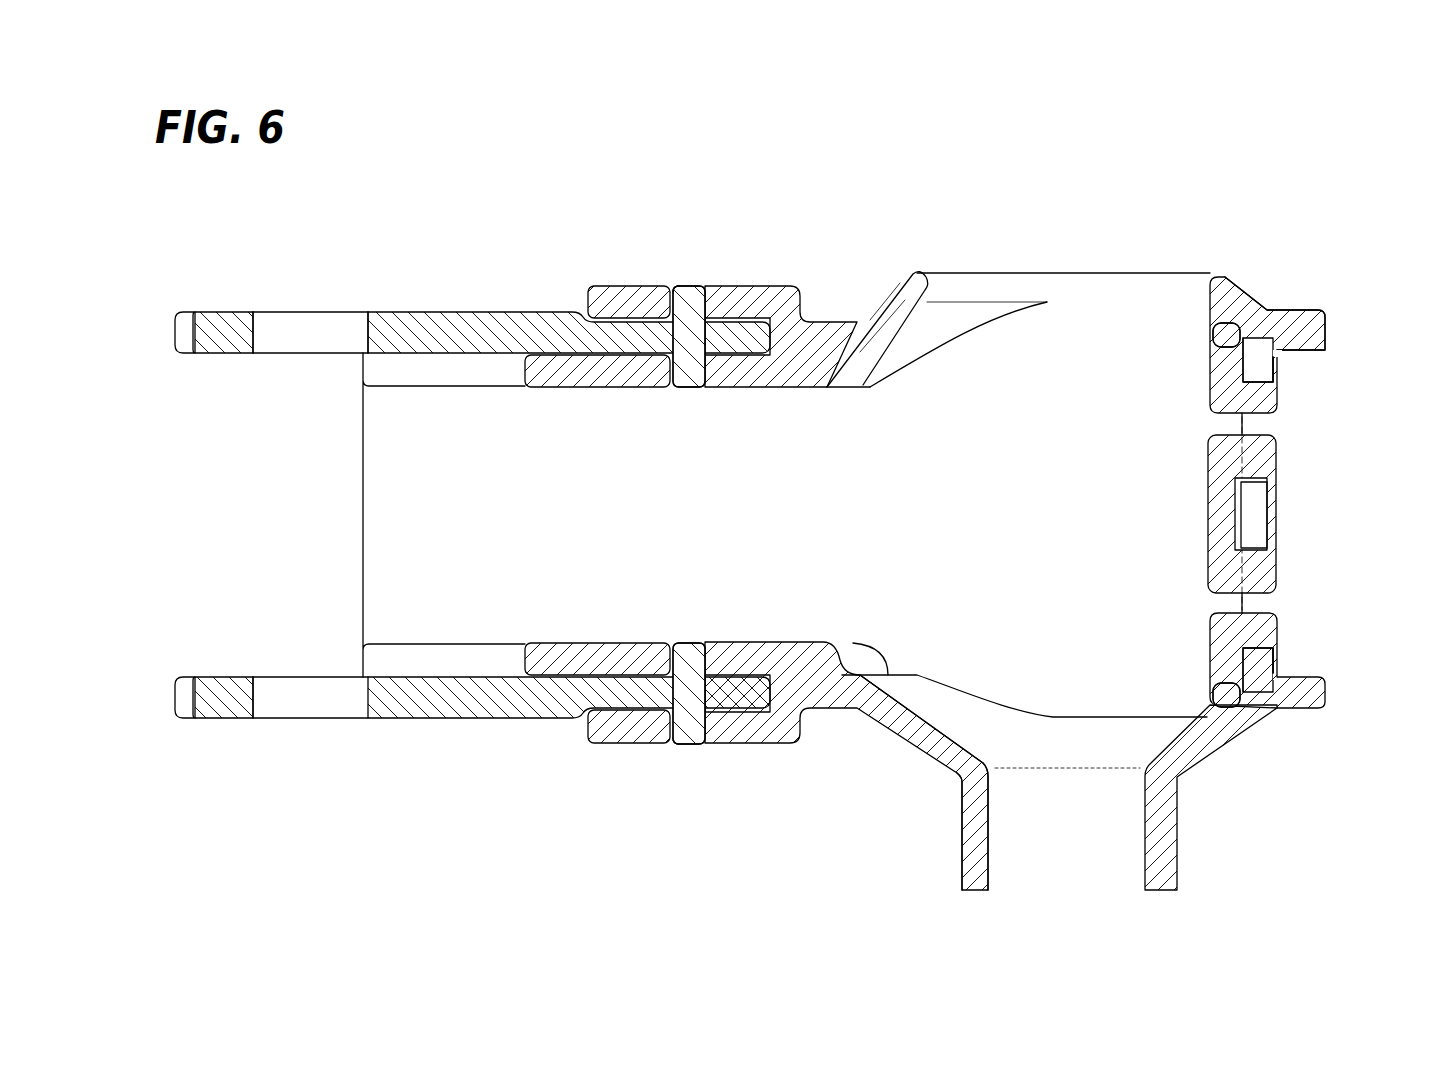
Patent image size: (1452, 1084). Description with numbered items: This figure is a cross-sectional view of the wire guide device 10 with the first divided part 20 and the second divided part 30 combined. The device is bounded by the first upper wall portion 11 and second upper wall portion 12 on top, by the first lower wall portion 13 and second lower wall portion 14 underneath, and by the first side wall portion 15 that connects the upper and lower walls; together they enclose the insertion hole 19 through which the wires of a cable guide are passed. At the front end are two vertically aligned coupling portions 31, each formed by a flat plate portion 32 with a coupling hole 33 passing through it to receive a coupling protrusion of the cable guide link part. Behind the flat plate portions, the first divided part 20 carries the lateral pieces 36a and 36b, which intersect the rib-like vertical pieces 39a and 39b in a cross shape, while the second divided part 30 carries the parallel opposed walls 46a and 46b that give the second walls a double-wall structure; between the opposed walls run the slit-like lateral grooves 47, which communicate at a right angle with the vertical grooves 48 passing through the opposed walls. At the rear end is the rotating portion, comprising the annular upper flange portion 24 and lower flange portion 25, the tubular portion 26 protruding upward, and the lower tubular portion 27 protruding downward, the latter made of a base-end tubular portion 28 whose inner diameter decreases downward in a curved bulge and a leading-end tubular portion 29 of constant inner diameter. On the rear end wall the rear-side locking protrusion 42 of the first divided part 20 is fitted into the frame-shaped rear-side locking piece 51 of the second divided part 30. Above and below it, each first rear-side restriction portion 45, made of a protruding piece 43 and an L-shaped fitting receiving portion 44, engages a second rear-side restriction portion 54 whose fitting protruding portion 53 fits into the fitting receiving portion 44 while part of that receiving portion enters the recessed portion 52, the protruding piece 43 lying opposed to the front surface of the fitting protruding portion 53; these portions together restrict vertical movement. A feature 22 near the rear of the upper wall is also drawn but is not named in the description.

The wire guide device 10 is at (522, 195).
The first upper wall portion 11 is at (478, 318).
The second upper wall portion 12 is at (551, 362).
The first lower wall portion 13 is at (478, 712).
The second lower wall portion 14 is at (547, 668).
The first side wall portion 15 is at (390, 556).
The insertion hole 19 is at (760, 528).
The first divided part 20 is at (412, 318).
The lock projection 22 is at (920, 290).
The upper flange portion 24 is at (1313, 327).
The lower flange portion 25 is at (1322, 690).
The tubular portion 26 is at (903, 285).
The lower tubular portion 27 is at (892, 800).
The base-end tubular portion 28 is at (933, 755).
The leading-end tubular portion 29 is at (965, 860).
The second divided part 30 is at (1290, 318).
The coupling portion 31 is at (287, 252).
The flat plate portion 32 is at (222, 322).
The coupling hole 33 is at (253, 337).
The lateral piece 36a is at (757, 333).
The lateral piece 36b is at (753, 697).
The vertical piece 39a is at (683, 300).
The vertical piece 39b is at (685, 728).
The rear-side locking protrusion 42 is at (1252, 500).
The protruding piece 43 is at (1225, 338).
The fitting receiving portion 44 is at (1257, 397).
The first rear-side restriction portion 45 is at (1105, 218).
The opposed wall 46a is at (580, 367).
The opposed wall 46b is at (615, 740).
The lateral groove 47 is at (724, 322).
The vertical groove 48 is at (683, 295).
The rear-side locking piece 51 is at (1213, 512).
The recessed portion 52 is at (1243, 423).
The fitting protruding portion 53 is at (1267, 360).
The second rear-side restriction portion 54 is at (1372, 355).